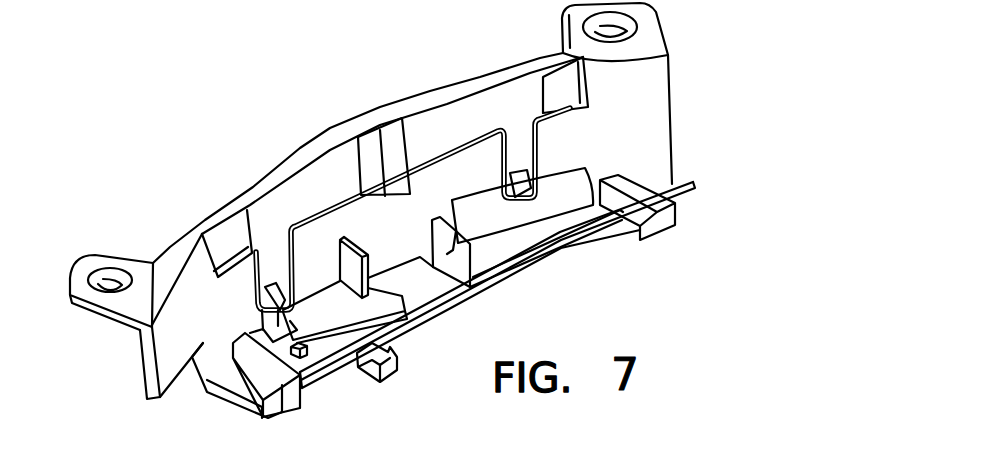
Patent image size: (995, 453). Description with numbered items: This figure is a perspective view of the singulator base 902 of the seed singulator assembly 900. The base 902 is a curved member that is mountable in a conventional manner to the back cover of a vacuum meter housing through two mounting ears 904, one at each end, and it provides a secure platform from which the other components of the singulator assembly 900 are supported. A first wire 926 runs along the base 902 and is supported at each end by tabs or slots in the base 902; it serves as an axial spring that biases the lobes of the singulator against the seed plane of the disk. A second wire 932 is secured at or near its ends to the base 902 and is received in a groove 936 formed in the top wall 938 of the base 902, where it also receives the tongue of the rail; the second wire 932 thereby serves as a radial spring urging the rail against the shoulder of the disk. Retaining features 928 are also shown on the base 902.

The seed singulator assembly 900 is at (338, 89).
The singulator base 902 is at (251, 186).
The mounting ears 904 is at (104, 265).
The first wire 926 is at (437, 308).
The retaining clip 928 is at (293, 375).
The second wire 932 is at (337, 203).
The groove 936 is at (373, 145).
The top wall 938 is at (643, 120).